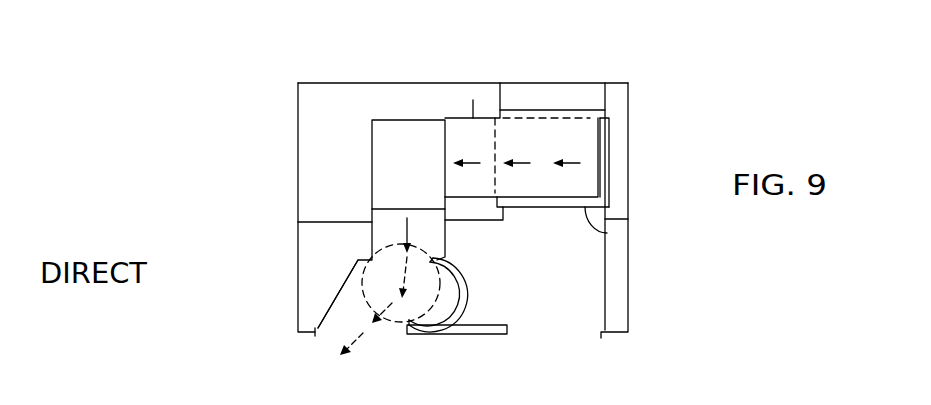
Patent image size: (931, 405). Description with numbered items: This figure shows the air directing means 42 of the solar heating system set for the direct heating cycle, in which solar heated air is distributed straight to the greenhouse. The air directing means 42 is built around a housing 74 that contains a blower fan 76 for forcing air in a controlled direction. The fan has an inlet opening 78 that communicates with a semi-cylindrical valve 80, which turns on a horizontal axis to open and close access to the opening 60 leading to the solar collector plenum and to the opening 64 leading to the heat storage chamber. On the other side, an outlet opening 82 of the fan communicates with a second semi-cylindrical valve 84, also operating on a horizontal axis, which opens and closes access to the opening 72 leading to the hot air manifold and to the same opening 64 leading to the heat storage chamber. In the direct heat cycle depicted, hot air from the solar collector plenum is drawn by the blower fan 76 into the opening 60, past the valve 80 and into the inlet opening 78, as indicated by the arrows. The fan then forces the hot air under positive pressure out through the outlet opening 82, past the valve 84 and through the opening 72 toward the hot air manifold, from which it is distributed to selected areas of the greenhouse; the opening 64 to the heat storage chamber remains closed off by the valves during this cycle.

The air directing means 42 is at (615, 78).
The opening 60 is at (592, 135).
The opening 64 is at (590, 303).
The opening 72 is at (330, 327).
The housing 74 is at (298, 142).
The blower fan 76 is at (412, 118).
The inlet opening 78 is at (473, 100).
The semi-cylindrical valve 80 is at (607, 233).
The outlet opening 82 is at (372, 237).
The second semi-cylindrical valve 84 is at (443, 307).